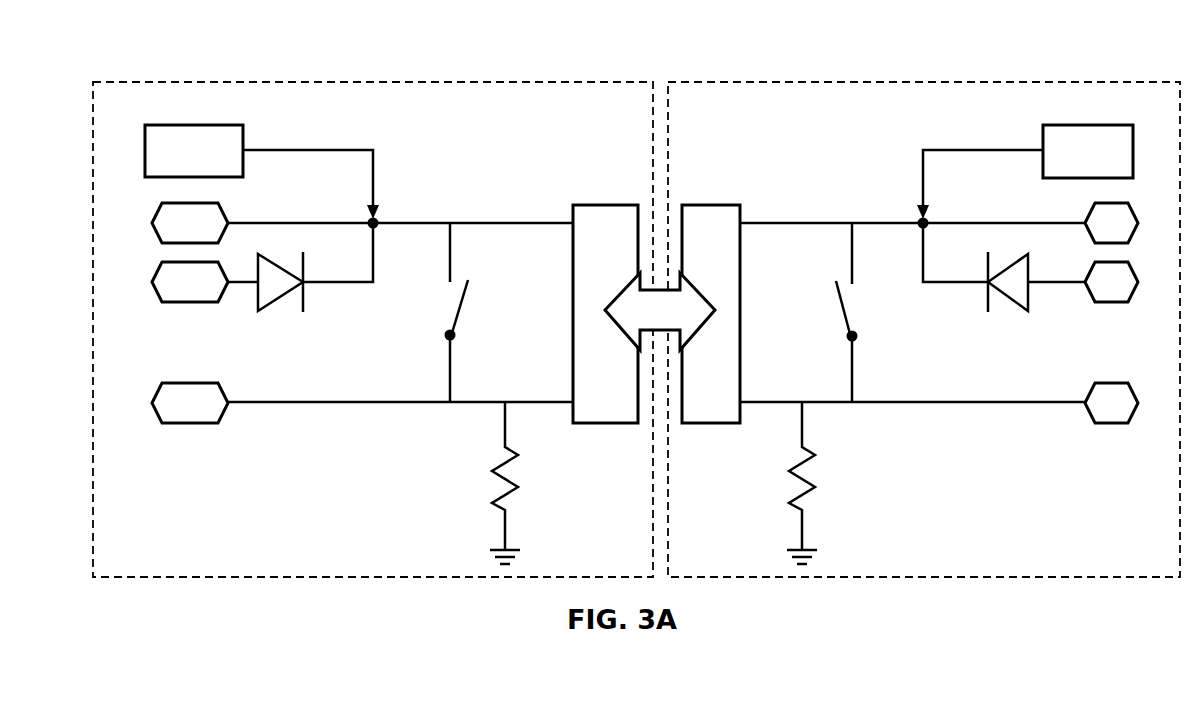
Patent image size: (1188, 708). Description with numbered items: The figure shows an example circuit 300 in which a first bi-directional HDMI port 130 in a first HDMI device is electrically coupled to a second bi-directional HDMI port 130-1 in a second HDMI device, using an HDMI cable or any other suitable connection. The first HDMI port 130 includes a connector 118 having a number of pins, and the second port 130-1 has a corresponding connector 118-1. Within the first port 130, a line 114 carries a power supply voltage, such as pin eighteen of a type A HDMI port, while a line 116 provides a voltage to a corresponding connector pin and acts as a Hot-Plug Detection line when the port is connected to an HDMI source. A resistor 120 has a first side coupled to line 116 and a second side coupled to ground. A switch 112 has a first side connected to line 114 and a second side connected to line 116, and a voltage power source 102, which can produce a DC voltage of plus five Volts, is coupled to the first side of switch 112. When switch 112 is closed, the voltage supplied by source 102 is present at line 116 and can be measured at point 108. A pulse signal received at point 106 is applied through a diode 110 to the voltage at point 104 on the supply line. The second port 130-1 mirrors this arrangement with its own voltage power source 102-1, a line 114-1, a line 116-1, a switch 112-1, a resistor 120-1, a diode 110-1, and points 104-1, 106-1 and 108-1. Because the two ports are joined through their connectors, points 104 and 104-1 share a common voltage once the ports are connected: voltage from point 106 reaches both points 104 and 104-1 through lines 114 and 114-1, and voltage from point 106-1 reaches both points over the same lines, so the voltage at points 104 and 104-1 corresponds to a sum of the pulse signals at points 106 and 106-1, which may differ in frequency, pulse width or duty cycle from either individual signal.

The circuit 300 is at (595, 65).
The second bi-directional HDMI port 130-1 is at (112, 81).
The first bi-directional HDMI port 130 is at (683, 81).
The voltage power source 102-1 is at (145, 147).
The voltage power source 102 is at (1133, 148).
The point 104-1 is at (362, 223).
The point 104 is at (939, 223).
The point 106-1 is at (205, 282).
The point 106 is at (1083, 282).
The point 108-1 is at (190, 403).
The point 108 is at (1111, 403).
The diode 110-1 is at (305, 293).
The diode 110 is at (988, 297).
The switch 112-1 is at (440, 319).
The switch 112 is at (862, 320).
The line 114-1 is at (480, 222).
The line 114 is at (852, 222).
The line 116-1 is at (420, 402).
The line 116 is at (883, 402).
The HDMI connector 118-1 is at (573, 207).
The HDMI connector 118 is at (745, 208).
The resistor 120-1 is at (498, 483).
The resistor 120 is at (815, 480).